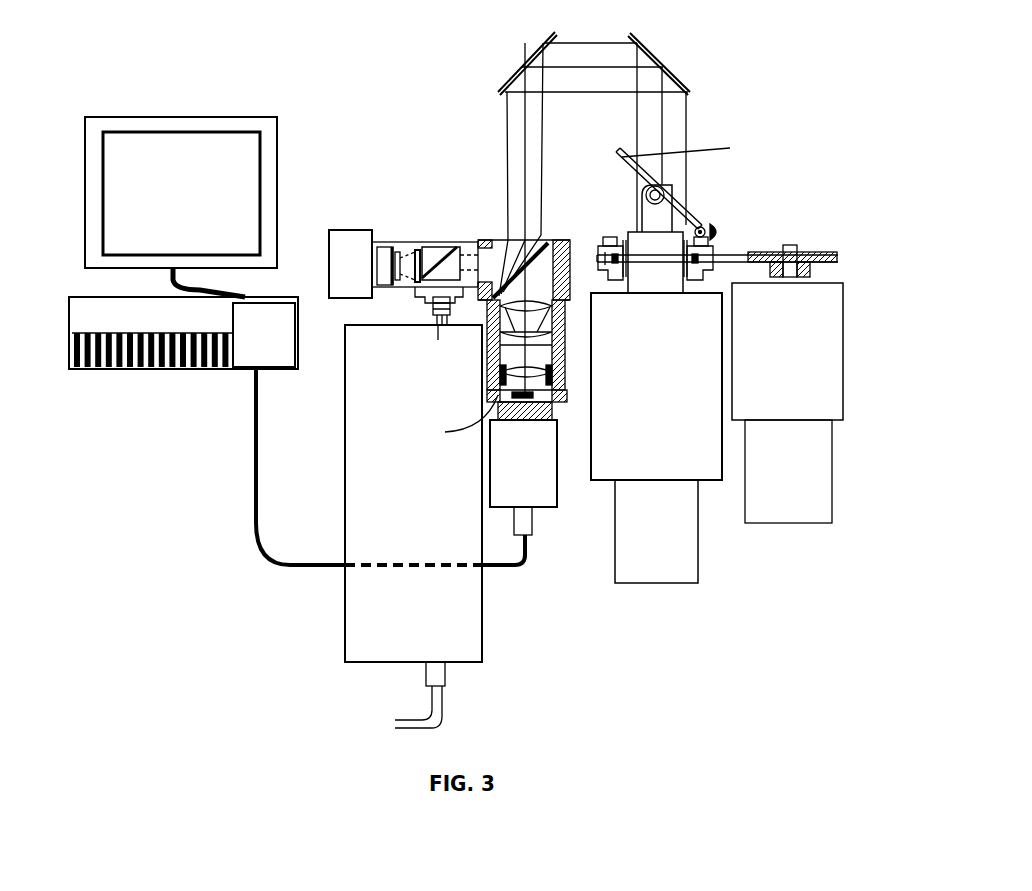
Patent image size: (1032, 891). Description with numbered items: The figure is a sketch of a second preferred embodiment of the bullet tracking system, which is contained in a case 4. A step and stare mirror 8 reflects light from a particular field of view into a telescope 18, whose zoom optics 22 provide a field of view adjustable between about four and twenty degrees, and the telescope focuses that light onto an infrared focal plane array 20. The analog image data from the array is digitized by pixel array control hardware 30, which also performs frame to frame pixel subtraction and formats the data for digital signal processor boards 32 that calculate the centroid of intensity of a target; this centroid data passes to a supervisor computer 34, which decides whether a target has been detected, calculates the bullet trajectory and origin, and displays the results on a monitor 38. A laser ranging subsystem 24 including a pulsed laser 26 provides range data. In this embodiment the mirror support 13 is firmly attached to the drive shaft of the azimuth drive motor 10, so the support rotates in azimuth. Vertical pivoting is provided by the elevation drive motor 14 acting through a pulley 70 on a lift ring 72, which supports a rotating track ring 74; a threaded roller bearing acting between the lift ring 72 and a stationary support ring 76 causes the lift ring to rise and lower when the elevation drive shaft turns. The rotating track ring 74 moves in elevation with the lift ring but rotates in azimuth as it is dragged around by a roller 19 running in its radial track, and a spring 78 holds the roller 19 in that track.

The case 4 is at (618, 158).
The step and stare mirror 8 is at (520, 238).
The azimuth drive motor 10 is at (656, 438).
The mirror support 13 is at (648, 225).
The elevation drive motor 14 is at (787, 403).
The telescope 18 is at (555, 323).
The roller 19 is at (672, 186).
The infrared focal plane array 20 is at (528, 423).
The zoom optics 22 is at (556, 412).
The laser ranging subsystem 24 is at (295, 615).
The pulsed laser 26 is at (413, 526).
The pixel array control hardware 30 is at (538, 497).
The digital signal processor boards 32 is at (250, 370).
The supervisor computer 34 is at (90, 297).
The monitor 38 is at (243, 150).
The pulley 70 is at (815, 252).
The lift ring 72 is at (713, 248).
The rotating track ring 74 is at (610, 237).
The stationary support ring 76 is at (703, 275).
The spring 78 is at (716, 230).